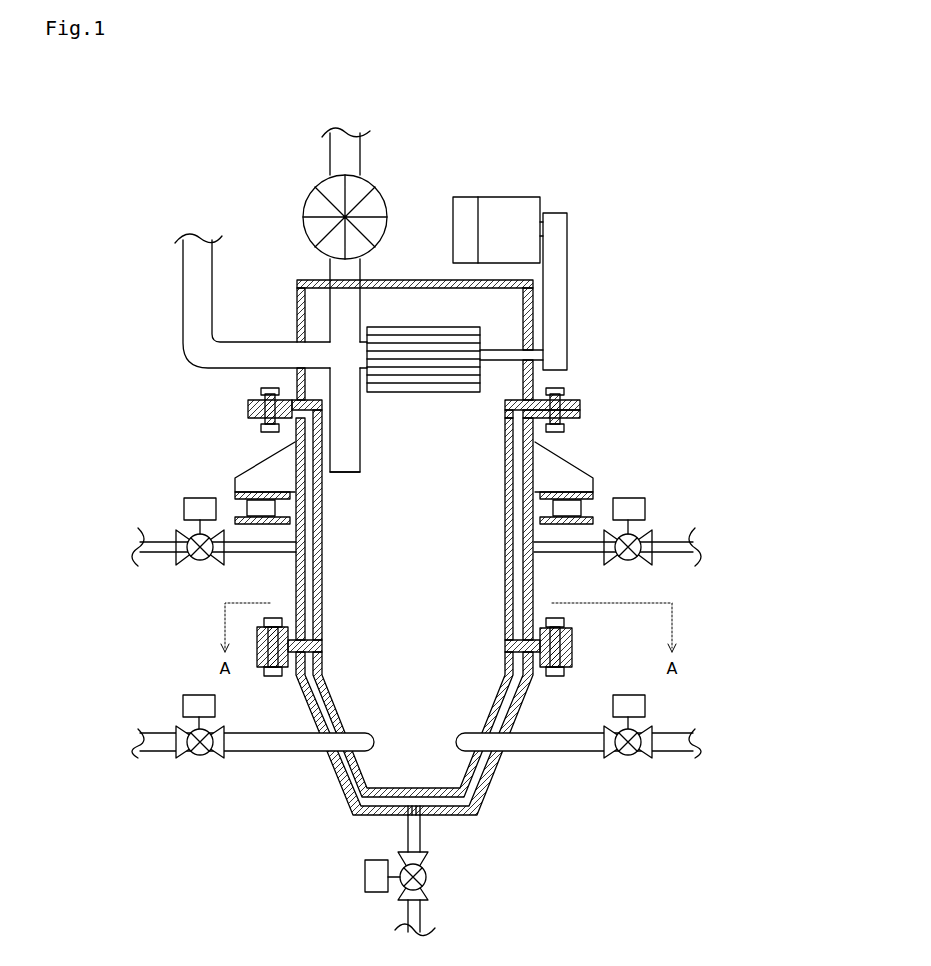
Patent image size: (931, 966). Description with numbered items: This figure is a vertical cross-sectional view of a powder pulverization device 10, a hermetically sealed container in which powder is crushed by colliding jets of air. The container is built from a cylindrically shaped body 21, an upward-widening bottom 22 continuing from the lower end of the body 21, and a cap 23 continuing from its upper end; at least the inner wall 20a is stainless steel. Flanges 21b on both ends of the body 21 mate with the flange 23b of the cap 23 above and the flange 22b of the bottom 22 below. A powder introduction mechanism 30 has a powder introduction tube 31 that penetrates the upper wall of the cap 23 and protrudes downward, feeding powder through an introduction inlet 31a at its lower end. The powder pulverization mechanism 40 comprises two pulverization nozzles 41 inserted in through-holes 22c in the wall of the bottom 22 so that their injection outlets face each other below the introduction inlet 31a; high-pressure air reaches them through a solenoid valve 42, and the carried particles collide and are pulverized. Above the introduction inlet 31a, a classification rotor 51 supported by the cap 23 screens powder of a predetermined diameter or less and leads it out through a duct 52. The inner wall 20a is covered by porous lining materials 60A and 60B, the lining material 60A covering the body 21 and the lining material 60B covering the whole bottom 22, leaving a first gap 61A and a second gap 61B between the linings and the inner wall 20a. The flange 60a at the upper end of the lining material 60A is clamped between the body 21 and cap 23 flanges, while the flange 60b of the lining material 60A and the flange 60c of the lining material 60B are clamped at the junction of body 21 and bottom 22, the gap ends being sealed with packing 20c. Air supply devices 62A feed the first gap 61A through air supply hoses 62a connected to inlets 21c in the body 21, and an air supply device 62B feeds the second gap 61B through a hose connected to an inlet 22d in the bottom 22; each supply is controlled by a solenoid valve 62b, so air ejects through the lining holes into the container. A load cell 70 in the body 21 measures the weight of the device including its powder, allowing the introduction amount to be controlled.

The powder pulverization device 10 is at (663, 147).
The inner wall 20a is at (395, 280).
The packing 20c is at (582, 410).
The body 21 is at (540, 445).
The flange 21b is at (578, 425).
The inlet 21c is at (290, 522).
The bottom 22 is at (500, 775).
The flange 22b is at (572, 668).
The through-hole 22c is at (312, 733).
The inlet 22d is at (408, 822).
The cap 23 is at (540, 312).
The flange 23b is at (575, 400).
The powder introduction mechanism 30 is at (330, 152).
The powder introduction tube 31 is at (290, 440).
The introduction inlet 31a is at (345, 475).
The powder pulverization mechanism 40 is at (416, 794).
The pulverization nozzle 41 is at (255, 752).
The solenoid valve 42 is at (272, 830).
The classification rotor 51 is at (437, 327).
The duct 52 is at (212, 283).
The flange 60a is at (535, 380).
The lining material 60A is at (505, 505).
The flange 60b is at (505, 633).
The lining material 60B is at (400, 790).
The flange 60c is at (505, 660).
The first gap 61A is at (545, 455).
The second gap 61B is at (455, 818).
The air supply device 62A is at (413, 662).
The air supply hose 62a is at (200, 534).
The solenoid valve 62b is at (178, 533).
The air supply device 62B is at (572, 855).
The load cell 70 is at (237, 512).